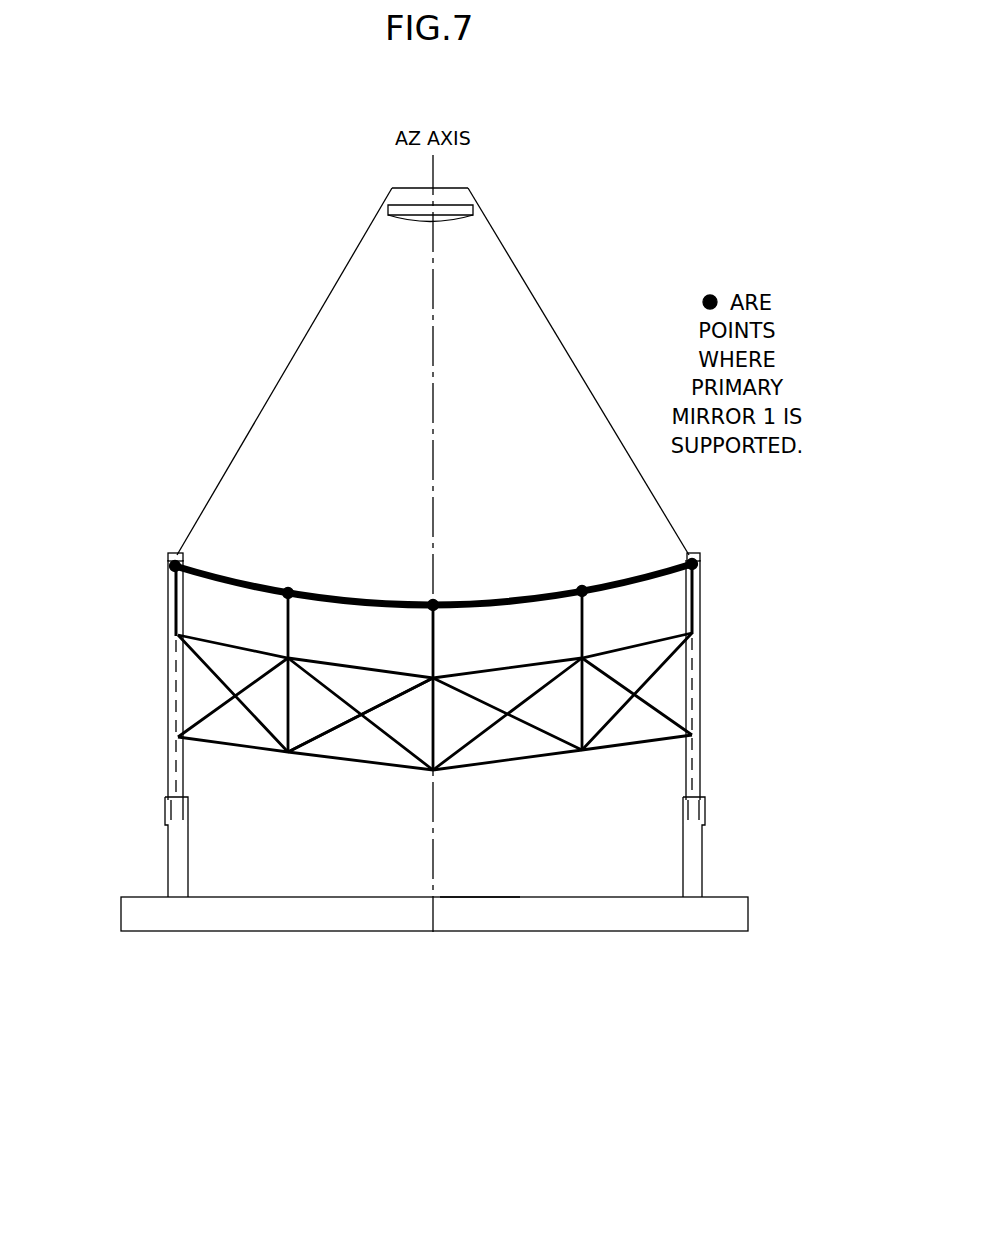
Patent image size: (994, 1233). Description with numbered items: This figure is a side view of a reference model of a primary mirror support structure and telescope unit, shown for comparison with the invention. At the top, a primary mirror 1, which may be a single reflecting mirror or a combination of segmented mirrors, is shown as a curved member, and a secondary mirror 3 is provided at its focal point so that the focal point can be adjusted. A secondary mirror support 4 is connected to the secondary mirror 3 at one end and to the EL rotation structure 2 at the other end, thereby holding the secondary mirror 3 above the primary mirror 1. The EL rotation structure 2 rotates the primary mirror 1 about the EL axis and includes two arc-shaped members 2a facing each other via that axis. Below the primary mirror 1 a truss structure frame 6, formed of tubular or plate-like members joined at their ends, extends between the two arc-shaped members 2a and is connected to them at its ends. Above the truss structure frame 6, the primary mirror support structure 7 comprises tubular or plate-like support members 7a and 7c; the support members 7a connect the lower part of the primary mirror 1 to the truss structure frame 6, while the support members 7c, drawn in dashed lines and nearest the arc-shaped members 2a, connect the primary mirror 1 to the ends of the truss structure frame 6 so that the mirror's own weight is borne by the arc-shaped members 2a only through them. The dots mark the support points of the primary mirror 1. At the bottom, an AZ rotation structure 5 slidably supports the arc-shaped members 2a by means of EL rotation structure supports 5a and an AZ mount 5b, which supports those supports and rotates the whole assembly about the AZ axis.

The primary mirror 1 is at (353, 598).
The EL rotation structure 2 is at (701, 655).
The arc-shaped member 2a is at (173, 777).
The secondary mirror 3 is at (412, 205).
The secondary mirror support 4 is at (318, 315).
The AZ rotation structure 5 is at (588, 934).
The EL rotation structure support 5a is at (175, 880).
The AZ mount 5b is at (480, 910).
The truss structure frame 6 is at (383, 738).
The primary mirror support structure 7 is at (440, 544).
The support member 7a is at (288, 593).
The support member 7c is at (171, 556).